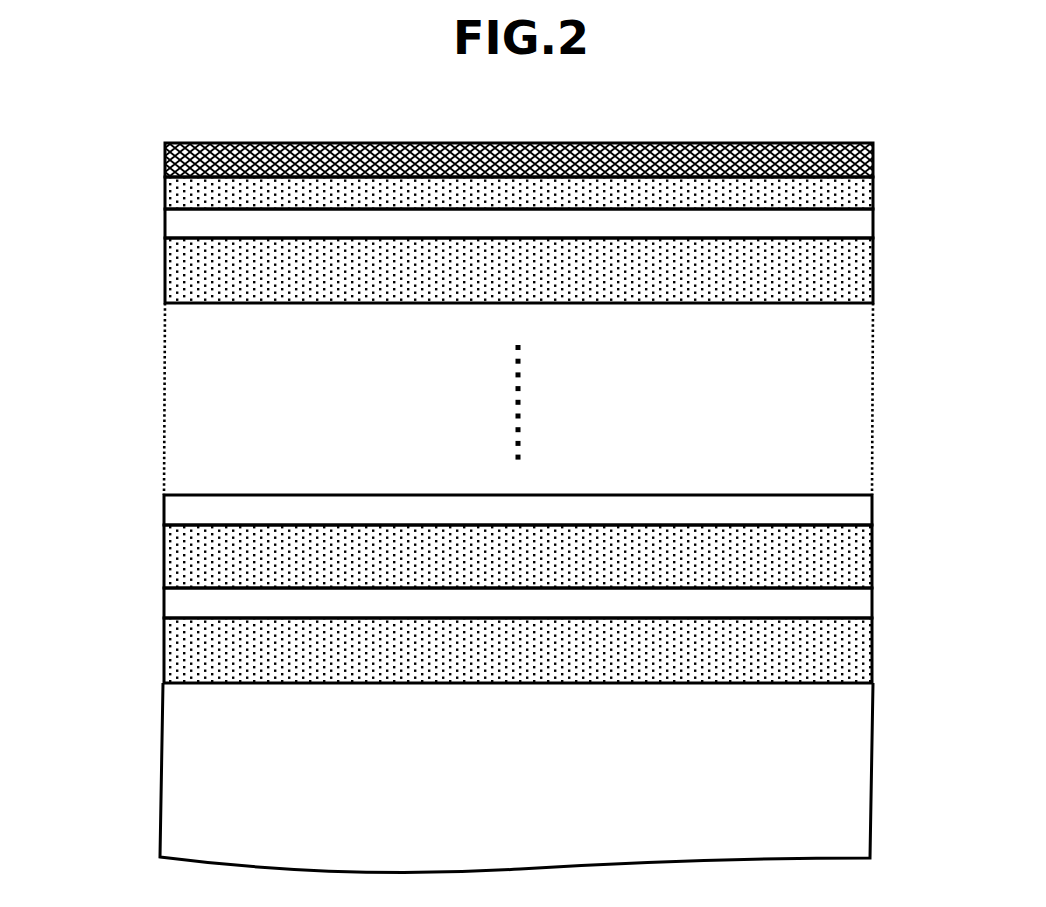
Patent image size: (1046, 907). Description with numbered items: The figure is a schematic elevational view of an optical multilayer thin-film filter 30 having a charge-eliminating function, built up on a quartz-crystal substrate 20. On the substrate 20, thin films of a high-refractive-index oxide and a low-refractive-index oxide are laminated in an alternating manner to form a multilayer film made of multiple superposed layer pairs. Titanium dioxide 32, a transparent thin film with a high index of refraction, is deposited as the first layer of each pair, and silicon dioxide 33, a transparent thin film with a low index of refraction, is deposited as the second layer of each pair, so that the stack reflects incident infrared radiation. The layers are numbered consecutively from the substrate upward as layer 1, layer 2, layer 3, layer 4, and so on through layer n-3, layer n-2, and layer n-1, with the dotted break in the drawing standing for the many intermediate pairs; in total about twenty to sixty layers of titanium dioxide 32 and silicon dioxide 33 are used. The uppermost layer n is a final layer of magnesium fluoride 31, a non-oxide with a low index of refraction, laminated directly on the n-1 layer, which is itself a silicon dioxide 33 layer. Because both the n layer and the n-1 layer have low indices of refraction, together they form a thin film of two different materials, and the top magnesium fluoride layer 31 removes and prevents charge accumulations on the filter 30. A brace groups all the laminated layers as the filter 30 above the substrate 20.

The quartz-crystal substrate 20 is at (516, 778).
The optical multilayer thin-film filter 30 is at (873, 683).
The magnesium fluoride layer 31 is at (519, 160).
The titanium dioxide layer 32 is at (518, 413).
The silicon dioxide layer 33 is at (518, 430).
The first layer 1 is at (164, 650).
The second layer 2 is at (164, 607).
The third layer 3 is at (164, 560).
The fourth layer 4 is at (164, 503).
The n layer n is at (165, 150).
The n-1 layer n-1 is at (165, 185).
The n-2 layer n-2 is at (165, 217).
The n-3 layer n-3 is at (165, 268).